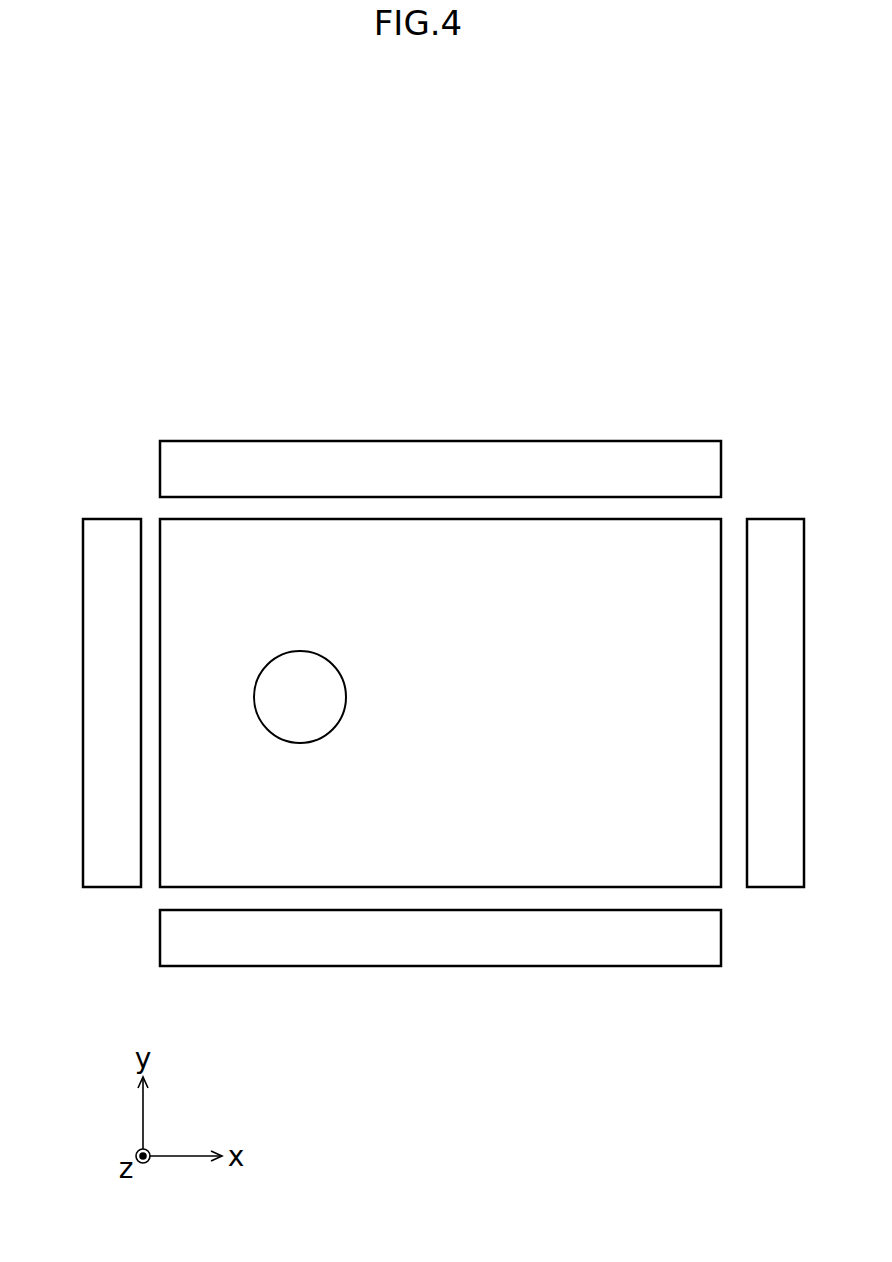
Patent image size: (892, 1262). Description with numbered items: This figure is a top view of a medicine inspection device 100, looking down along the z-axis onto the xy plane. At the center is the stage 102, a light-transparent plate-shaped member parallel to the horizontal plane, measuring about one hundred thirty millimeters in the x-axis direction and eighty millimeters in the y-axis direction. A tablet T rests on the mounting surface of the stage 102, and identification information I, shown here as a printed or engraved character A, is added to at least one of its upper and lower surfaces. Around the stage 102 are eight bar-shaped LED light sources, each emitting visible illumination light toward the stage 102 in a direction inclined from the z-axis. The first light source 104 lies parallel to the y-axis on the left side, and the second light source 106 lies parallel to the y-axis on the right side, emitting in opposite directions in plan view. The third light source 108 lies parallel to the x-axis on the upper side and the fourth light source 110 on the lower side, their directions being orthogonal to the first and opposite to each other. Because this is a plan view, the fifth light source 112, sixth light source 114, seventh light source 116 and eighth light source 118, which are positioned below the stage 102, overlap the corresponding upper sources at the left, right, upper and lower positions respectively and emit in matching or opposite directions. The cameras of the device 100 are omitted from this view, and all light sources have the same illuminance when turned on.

The medicine inspection device 100 is at (670, 342).
The stage 102 is at (715, 543).
The first light source 104 is at (114, 530).
The second light source 106 is at (775, 528).
The third light source 108 is at (667, 450).
The fourth light source 110 is at (668, 955).
The fifth light source 112 is at (117, 867).
The sixth light source 114 is at (778, 867).
The seventh light source 116 is at (341, 458).
The eighth light source 118 is at (341, 948).
The tablet T is at (254, 698).
The image character A is at (300, 698).
The identification information I is at (316, 678).